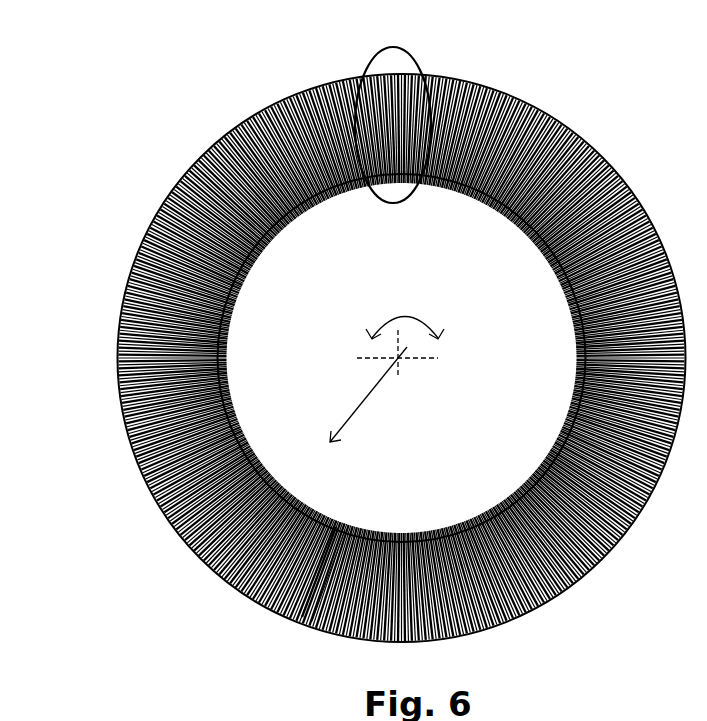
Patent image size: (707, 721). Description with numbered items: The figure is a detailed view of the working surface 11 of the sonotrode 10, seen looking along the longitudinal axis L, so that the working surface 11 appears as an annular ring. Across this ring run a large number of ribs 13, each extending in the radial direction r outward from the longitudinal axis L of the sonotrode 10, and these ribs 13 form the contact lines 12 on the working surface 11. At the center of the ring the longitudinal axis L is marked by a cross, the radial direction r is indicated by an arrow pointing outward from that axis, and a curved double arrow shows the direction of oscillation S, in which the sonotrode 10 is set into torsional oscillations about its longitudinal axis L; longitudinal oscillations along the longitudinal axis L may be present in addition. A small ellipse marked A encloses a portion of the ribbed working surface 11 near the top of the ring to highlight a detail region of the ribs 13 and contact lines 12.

The sonotrode 10 is at (124, 431).
The working surface 11 is at (188, 538).
The contact lines 12 is at (306, 620).
The ribs 13 is at (313, 622).
The detail region A is at (410, 45).
The longitudinal axis L is at (397, 364).
The direction of oscillation S is at (405, 306).
The radial direction r is at (368, 394).